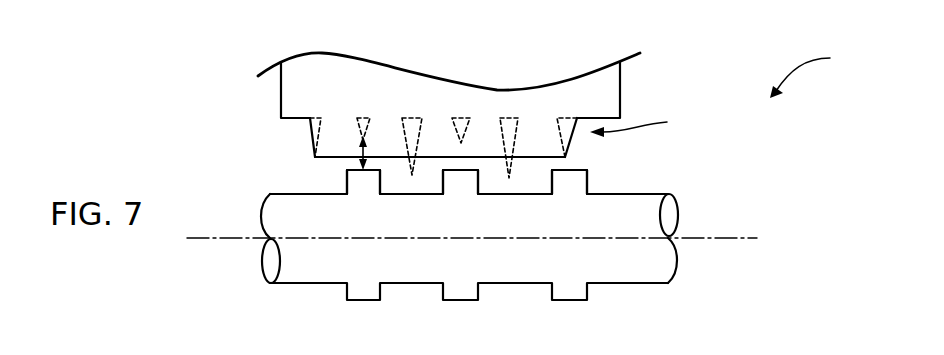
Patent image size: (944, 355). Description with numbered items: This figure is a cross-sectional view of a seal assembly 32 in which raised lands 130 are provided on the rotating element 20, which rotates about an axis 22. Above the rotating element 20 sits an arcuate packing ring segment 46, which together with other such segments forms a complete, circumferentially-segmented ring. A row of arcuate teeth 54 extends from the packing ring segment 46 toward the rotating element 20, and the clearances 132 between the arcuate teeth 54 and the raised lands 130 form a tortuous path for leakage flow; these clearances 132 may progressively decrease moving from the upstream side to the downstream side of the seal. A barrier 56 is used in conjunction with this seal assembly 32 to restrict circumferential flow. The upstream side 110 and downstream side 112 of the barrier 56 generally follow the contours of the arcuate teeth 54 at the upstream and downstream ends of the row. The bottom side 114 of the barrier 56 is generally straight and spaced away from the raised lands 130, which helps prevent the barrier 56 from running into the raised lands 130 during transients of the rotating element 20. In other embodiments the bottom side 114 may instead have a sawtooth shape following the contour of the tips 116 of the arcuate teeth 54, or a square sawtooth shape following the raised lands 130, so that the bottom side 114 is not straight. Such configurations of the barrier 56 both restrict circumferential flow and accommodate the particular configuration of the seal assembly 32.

The rotating element 20 is at (260, 262).
The axis 22 is at (712, 238).
The seal assembly 32 is at (814, 69).
The arcuate packing ring segment 46 is at (610, 98).
The arcuate teeth 54 is at (412, 127).
The barrier 56 is at (641, 121).
The upstream side 110 is at (308, 127).
The downstream side 112 is at (575, 140).
The bottom side 114 is at (330, 158).
The tips 116 is at (410, 175).
The raised lands 130 is at (345, 183).
The clearances 132 is at (360, 150).